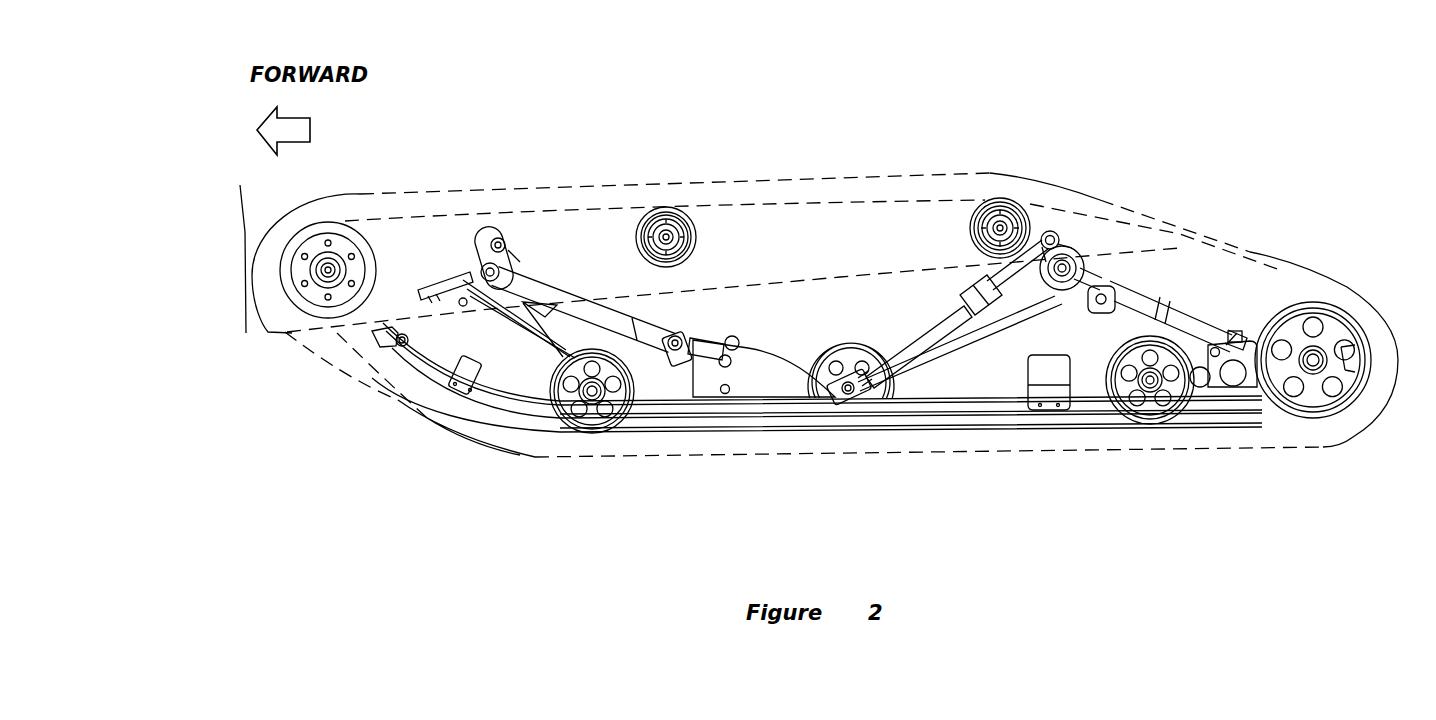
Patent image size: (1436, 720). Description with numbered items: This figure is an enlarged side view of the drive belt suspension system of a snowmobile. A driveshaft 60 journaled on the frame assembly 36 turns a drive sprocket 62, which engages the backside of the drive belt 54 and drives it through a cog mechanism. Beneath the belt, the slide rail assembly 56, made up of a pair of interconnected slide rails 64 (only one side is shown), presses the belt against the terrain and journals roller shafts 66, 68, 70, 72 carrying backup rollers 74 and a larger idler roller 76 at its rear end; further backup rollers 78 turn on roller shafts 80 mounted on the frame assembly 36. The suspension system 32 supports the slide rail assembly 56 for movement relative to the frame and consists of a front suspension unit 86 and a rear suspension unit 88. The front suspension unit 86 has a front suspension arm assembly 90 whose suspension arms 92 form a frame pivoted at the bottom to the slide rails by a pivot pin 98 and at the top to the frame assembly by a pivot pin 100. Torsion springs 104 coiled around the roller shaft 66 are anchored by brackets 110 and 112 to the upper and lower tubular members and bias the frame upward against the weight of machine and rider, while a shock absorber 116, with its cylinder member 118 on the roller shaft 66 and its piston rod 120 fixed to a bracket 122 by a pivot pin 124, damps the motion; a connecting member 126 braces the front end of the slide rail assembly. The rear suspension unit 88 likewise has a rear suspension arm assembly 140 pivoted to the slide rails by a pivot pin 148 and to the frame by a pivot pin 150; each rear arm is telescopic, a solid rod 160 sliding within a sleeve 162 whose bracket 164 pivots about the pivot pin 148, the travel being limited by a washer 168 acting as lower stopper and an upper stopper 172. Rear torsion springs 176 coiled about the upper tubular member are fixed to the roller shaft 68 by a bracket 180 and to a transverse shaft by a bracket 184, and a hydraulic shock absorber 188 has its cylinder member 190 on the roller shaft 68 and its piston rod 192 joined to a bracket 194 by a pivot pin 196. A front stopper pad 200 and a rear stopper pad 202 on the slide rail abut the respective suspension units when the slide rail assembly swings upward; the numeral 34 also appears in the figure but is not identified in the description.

The suspension system 32 is at (1158, 208).
The endless track 34 is at (348, 378).
The frame assembly 36 is at (245, 258).
The drive belt 54 is at (865, 172).
The slide rail assembly 56 is at (788, 357).
The driveshaft 60 is at (320, 284).
The drive sprocket 62 is at (352, 235).
The slide rails 64 is at (765, 393).
The roller shaft 66 is at (547, 410).
The roller shaft 68 is at (837, 393).
The roller shaft 70 is at (1147, 425).
The roller shaft 72 is at (1305, 375).
The backup rollers 74 is at (595, 440).
The idler roller 76 is at (1323, 300).
The backup rollers 78 is at (693, 217).
The roller shafts 80 is at (660, 208).
The front suspension unit 86 is at (568, 275).
The rear suspension unit 88 is at (873, 285).
The front suspension arm assembly 90 is at (633, 307).
The suspension arms 92 is at (535, 290).
The pivot pin 98 is at (733, 360).
The pivot pin 100 is at (477, 263).
The torsion springs 104 is at (652, 380).
The bracket 110 is at (463, 293).
The bracket 112 is at (707, 327).
The shock absorber 116 is at (563, 328).
The cylinder member 118 is at (560, 356).
The piston rod 120 is at (508, 250).
The bracket 122 is at (482, 233).
The pivot pin 124 is at (500, 235).
The connecting member 126 is at (463, 307).
The rear suspension arm assembly 140 is at (1133, 325).
The pivot pin 148 is at (1228, 390).
The pivot pin 150 is at (1078, 255).
The columnar portion or rod 160 is at (1245, 343).
The sleeve 162 is at (1233, 338).
The bracket 164 is at (1215, 360).
The washer 168 is at (1292, 297).
The stopper 172 is at (1165, 303).
The torsion springs 176 is at (995, 325).
The bracket 180 is at (862, 395).
The bracket 184 is at (1150, 290).
The hydraulic shock absorber 188 is at (957, 313).
The cylinder member 190 is at (928, 332).
The piston rod 192 is at (1049, 231).
The bracket 194 is at (1072, 247).
The pivot pin 196 is at (1054, 247).
The front stopper pad 200 is at (455, 372).
The rear stopper pad 202 is at (1007, 383).